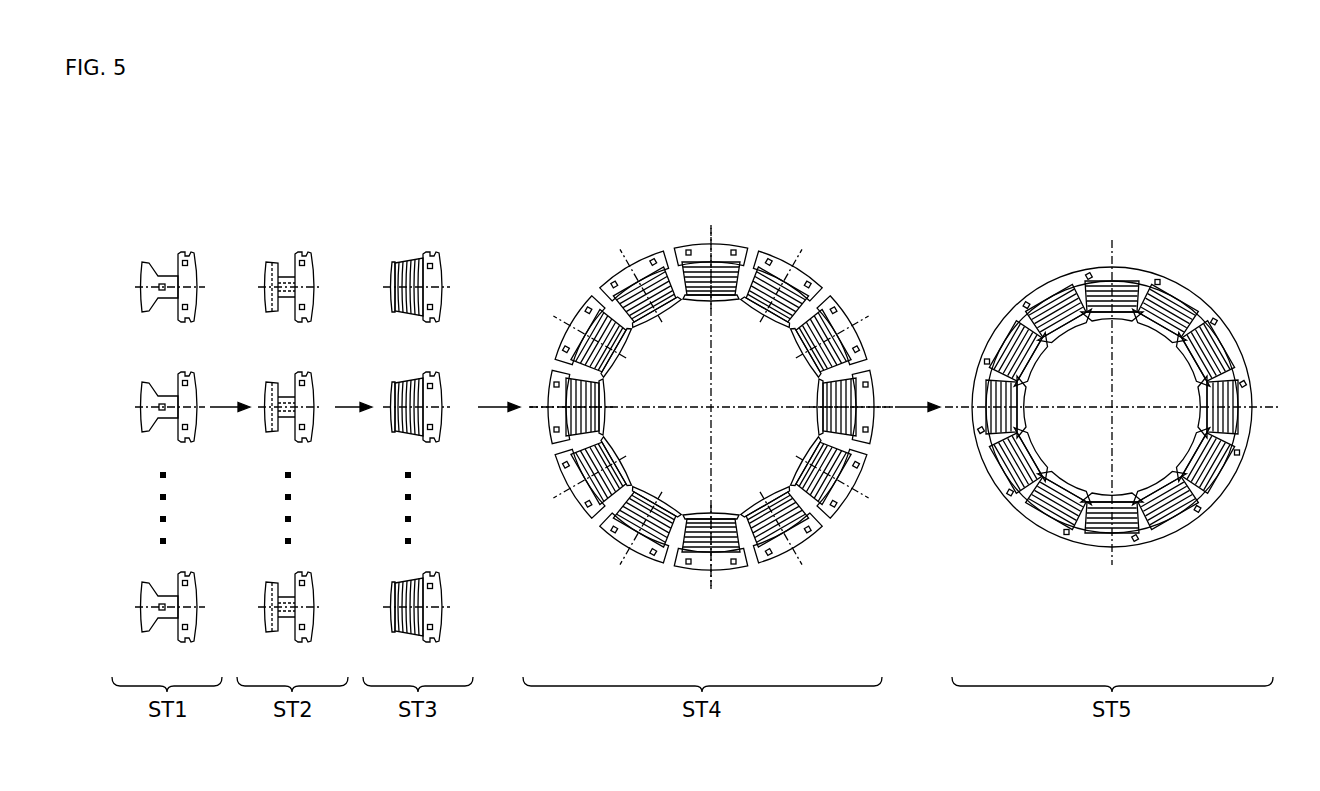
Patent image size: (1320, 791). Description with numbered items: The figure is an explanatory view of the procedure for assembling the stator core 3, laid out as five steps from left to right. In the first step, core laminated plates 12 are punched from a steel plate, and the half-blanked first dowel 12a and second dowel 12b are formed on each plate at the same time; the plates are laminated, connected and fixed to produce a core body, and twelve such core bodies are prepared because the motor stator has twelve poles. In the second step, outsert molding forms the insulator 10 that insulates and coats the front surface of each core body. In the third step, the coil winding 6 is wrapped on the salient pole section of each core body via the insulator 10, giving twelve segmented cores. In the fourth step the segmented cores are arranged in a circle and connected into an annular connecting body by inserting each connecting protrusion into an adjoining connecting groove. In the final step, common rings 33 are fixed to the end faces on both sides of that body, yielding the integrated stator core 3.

The core laminated plate 12 is at (196, 276).
The first dowel 12a is at (189, 307).
The second dowel 12b is at (180, 263).
The insulator 10 is at (287, 282).
The coil winding 6 is at (414, 262).
The stator core 3 is at (1232, 300).
The common ring 33 is at (1087, 538).